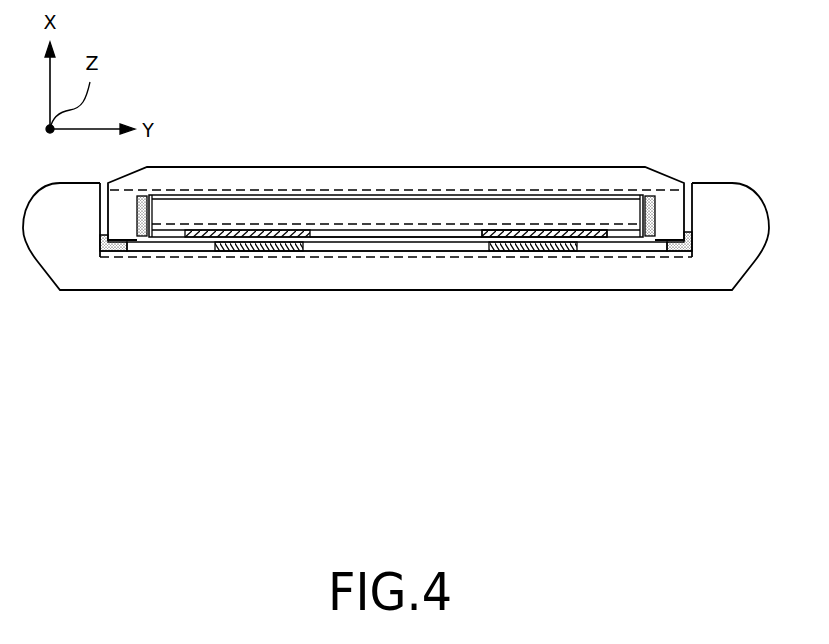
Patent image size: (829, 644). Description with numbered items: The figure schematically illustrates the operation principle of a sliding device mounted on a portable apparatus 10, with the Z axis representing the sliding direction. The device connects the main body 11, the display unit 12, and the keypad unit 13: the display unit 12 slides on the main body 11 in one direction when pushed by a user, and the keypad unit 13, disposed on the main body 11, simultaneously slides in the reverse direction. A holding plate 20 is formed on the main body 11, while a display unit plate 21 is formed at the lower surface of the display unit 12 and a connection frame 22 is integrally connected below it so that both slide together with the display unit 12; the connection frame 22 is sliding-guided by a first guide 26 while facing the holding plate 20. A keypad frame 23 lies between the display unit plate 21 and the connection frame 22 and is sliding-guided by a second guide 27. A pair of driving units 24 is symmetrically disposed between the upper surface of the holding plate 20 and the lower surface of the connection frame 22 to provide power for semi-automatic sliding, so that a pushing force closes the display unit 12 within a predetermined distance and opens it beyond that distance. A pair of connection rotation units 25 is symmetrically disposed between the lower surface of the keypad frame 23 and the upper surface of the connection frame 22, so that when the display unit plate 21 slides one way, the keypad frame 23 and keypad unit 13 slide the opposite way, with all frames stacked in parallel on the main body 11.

The portable apparatus 10 is at (238, 34).
The main body 11 is at (158, 280).
The display unit 12 is at (430, 175).
The keypad unit 13 is at (427, 218).
The holding plate 20 is at (328, 253).
The display unit plate 21 is at (350, 194).
The connection frame 22 is at (372, 239).
The keypad frame 23 is at (472, 232).
The driving unit 24 is at (223, 256).
The connection rotation unit 25 is at (258, 229).
The first guide 26 is at (103, 254).
The second guide 27 is at (147, 213).